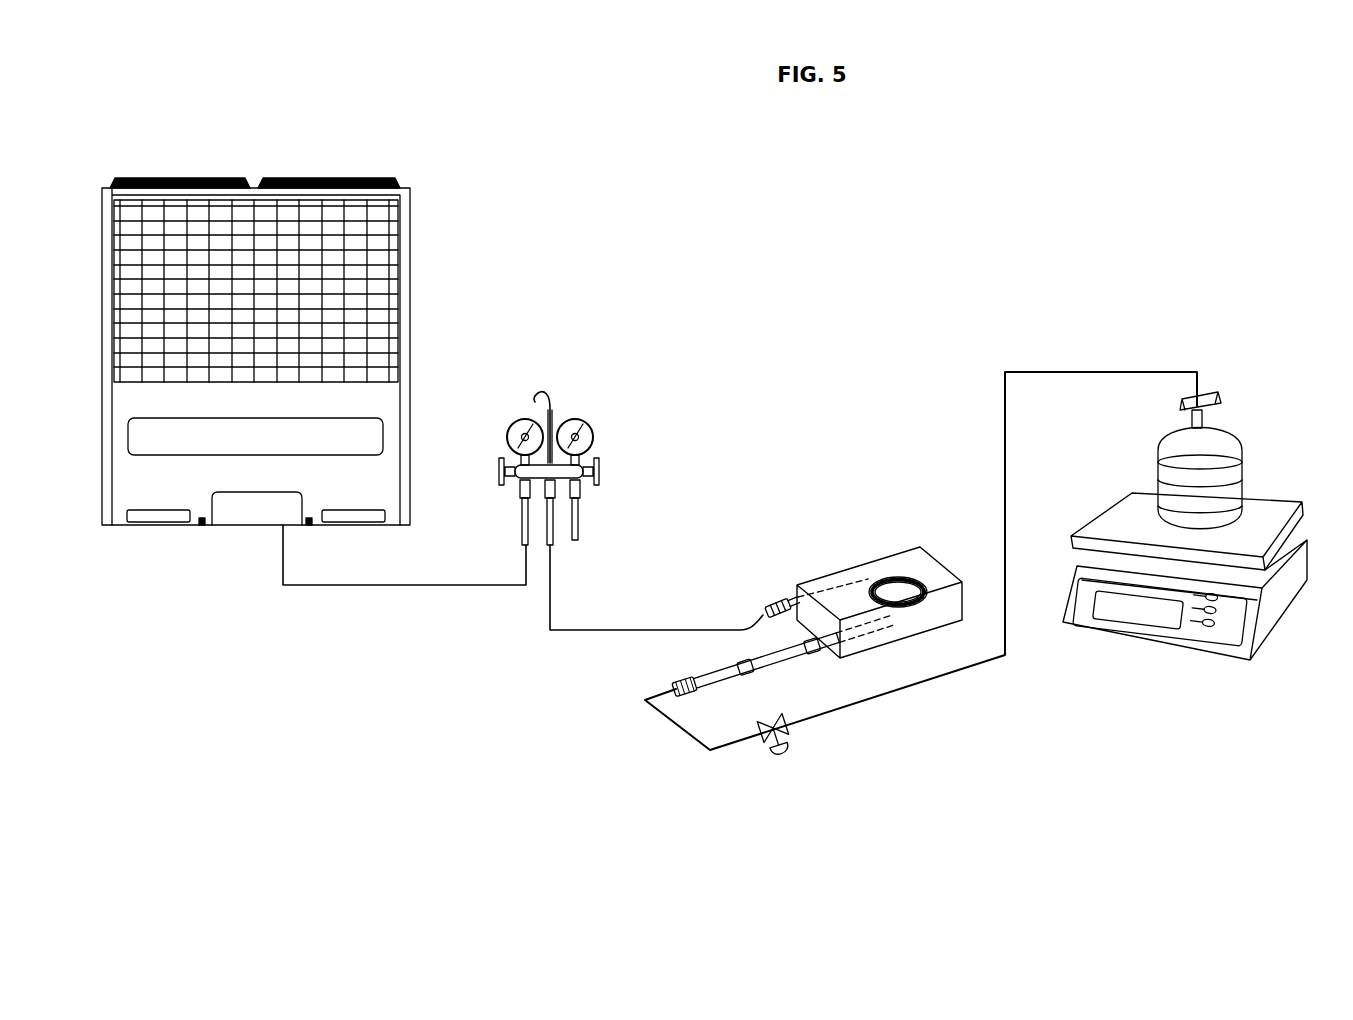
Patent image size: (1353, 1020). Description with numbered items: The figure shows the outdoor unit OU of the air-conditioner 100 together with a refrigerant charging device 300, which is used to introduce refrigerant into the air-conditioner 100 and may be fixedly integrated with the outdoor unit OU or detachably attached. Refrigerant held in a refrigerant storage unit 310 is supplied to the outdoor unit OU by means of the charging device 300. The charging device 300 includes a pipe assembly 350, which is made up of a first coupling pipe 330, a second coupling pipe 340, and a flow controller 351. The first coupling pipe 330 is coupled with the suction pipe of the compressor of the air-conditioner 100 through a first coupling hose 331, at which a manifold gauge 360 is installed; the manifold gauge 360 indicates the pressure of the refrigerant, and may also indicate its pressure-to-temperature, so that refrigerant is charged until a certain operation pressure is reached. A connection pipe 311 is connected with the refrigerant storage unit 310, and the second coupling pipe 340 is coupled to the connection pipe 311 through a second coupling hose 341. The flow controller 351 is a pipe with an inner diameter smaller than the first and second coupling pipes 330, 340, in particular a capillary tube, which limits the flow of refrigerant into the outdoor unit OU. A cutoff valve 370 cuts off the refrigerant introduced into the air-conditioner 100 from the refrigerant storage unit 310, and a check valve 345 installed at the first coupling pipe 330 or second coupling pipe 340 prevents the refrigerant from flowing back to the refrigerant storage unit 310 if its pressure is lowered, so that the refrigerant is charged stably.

The air-conditioner 100 is at (298, 318).
The outdoor unit OU is at (410, 211).
The refrigerant charging device 300 is at (826, 279).
The refrigerant storage unit 310 is at (1239, 460).
The connection pipe 311 is at (1215, 412).
The first coupling pipe 330 is at (781, 600).
The first coupling hose 331 is at (498, 590).
The second coupling pipe 340 is at (753, 660).
The second coupling hose 341 is at (912, 684).
The check valve 345 is at (795, 652).
The pipe assembly 350 is at (879, 560).
The flow controller 351 is at (889, 569).
The manifold gauge 360 is at (592, 422).
The cutoff valve 370 is at (790, 761).